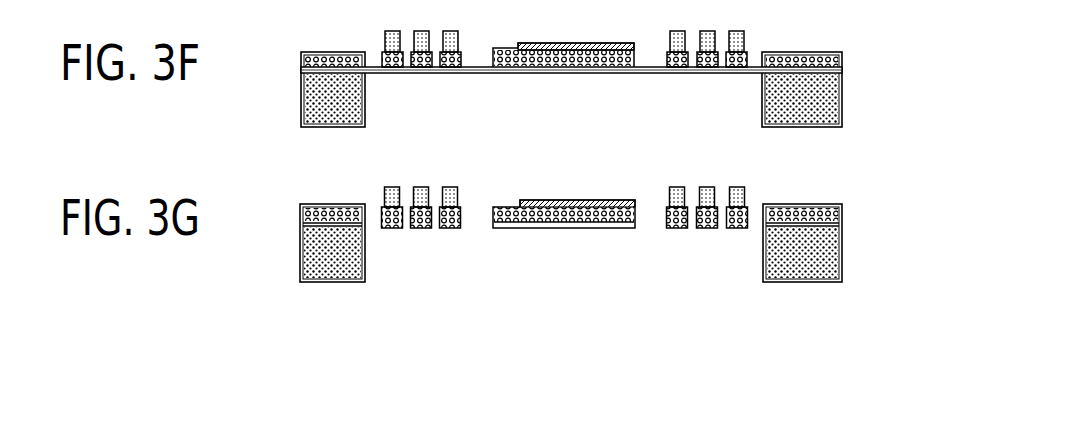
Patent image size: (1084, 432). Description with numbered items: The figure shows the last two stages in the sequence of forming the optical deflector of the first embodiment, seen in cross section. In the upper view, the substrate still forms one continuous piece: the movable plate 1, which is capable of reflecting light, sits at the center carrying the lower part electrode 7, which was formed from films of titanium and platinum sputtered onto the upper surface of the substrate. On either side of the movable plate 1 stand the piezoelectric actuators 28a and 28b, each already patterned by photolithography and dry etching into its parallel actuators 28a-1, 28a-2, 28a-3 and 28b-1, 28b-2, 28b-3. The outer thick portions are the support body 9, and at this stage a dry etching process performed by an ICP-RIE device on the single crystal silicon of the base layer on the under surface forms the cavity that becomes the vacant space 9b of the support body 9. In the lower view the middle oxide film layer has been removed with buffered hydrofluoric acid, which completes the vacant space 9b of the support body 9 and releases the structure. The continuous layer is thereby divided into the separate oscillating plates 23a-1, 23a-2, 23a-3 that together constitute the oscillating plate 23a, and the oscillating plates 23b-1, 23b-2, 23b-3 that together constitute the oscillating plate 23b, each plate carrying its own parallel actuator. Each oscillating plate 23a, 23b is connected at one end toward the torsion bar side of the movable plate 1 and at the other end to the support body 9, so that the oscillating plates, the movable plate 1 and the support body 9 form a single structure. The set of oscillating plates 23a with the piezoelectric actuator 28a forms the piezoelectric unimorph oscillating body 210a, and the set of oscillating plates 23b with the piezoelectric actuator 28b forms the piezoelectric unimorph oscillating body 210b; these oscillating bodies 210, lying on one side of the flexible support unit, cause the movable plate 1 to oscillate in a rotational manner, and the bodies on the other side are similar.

In FIG. 3F, the movable plate 1 is at (514, 62).
In FIG. 3G, the movable plate 1 is at (515, 218).
In FIG. 3F, the lower part electrode 7 is at (573, 44).
In FIG. 3G, the lower part electrode 7 is at (572, 201).
In FIG. 3F, the support body 9 is at (312, 97).
In FIG. 3G, the support body 9 is at (312, 255).
In FIG. 3G, the vacant space 9b is at (552, 265).
In FIG. 3F, the carrier strip 210 is at (571, 70).
In FIG. 3G, the piezoelectric unimorph oscillating body 210a is at (486, 143).
In FIG. 3G, the piezoelectric unimorph oscillating body 210b is at (682, 167).
In FIG. 3F, the oscillating plate 23a is at (425, 79).
In FIG. 3G, the oscillating plate 23a is at (422, 307).
In FIG. 3G, the oscillating plate 23a-1 is at (450, 228).
In FIG. 3G, the oscillating plate 23a-2 is at (421, 228).
In FIG. 3G, the oscillating plate 23a-3 is at (392, 228).
In FIG. 3F, the oscillating plate 23b is at (703, 80).
In FIG. 3G, the oscillating plate 23b is at (709, 307).
In FIG. 3G, the oscillating plate 23b-1 is at (677, 228).
In FIG. 3G, the oscillating plate 23b-2 is at (707, 228).
In FIG. 3G, the oscillating plate 23b-3 is at (737, 228).
In FIG. 3F, the piezoelectric actuator 28a is at (380, 43).
In FIG. 3G, the piezoelectric actuator 28a is at (344, 184).
In FIG. 3G, the parallel actuator 28a-1 is at (450, 187).
In FIG. 3G, the parallel actuator 28a-2 is at (421, 187).
In FIG. 3G, the parallel actuator 28a-3 is at (392, 187).
In FIG. 3F, the piezoelectric actuator 28b is at (754, 43).
In FIG. 3G, the piezoelectric actuator 28b is at (788, 184).
In FIG. 3G, the parallel actuator 28b-1 is at (677, 187).
In FIG. 3G, the parallel actuator 28b-2 is at (707, 187).
In FIG. 3G, the parallel actuator 28b-3 is at (737, 187).